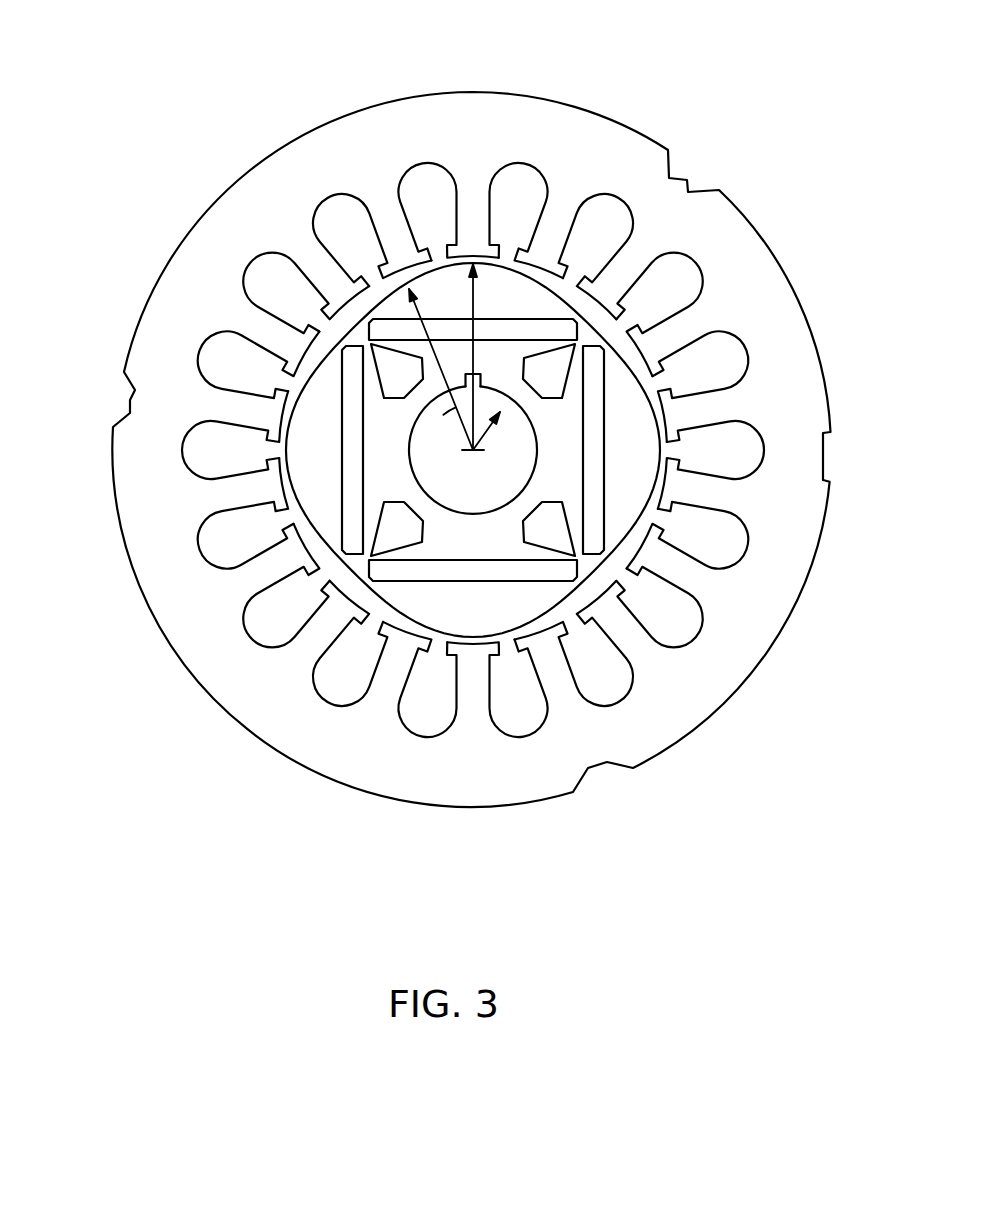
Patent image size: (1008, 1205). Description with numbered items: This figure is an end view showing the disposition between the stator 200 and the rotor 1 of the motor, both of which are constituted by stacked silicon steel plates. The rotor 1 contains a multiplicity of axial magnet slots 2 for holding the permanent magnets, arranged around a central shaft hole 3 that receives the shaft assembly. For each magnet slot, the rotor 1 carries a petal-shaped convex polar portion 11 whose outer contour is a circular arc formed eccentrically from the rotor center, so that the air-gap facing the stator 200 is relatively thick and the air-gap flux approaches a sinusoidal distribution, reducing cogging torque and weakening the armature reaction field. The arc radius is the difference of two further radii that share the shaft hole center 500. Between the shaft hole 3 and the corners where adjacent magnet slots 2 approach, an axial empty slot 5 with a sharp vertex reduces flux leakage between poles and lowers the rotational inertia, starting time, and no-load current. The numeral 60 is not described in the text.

The rotor 1 is at (382, 442).
The axial magnet slot 2 is at (529, 330).
The shaft hole 3 is at (433, 470).
The axial empty slot 5 is at (382, 353).
The petal-shaped convex polar portion 11 is at (469, 253).
The keyway 60 is at (480, 403).
The stator 200 is at (732, 240).
The shaft hole center 500 is at (473, 450).